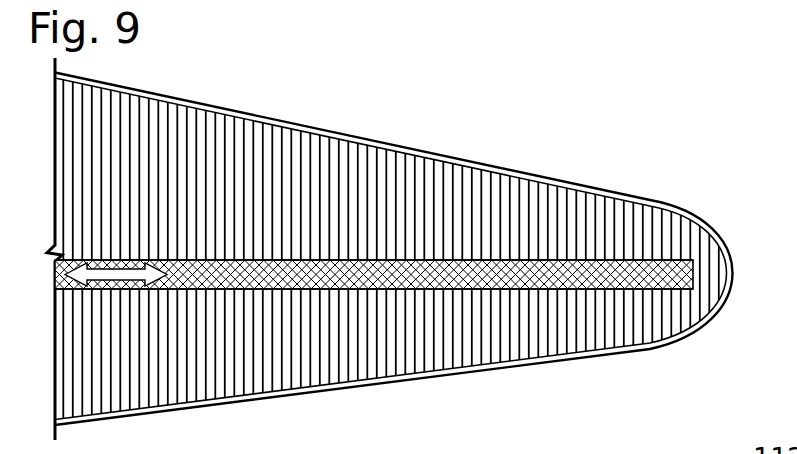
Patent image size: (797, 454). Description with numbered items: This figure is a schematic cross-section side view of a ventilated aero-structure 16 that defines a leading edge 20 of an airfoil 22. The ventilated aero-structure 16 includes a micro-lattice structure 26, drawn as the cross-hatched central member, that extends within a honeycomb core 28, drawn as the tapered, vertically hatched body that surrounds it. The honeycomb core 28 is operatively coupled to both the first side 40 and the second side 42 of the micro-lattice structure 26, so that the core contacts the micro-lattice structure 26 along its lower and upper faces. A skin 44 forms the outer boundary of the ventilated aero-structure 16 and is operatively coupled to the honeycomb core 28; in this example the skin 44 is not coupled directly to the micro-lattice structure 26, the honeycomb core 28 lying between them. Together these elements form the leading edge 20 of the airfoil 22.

The ventilated aero-structure 16 is at (703, 106).
The leading edge 20 is at (493, 133).
The airfoil 22 is at (578, 118).
The micro-lattice structure 26 is at (627, 250).
The honeycomb core 28 is at (525, 173).
The first side 40 is at (477, 290).
The second side 42 is at (350, 257).
The skin 44 is at (292, 123).